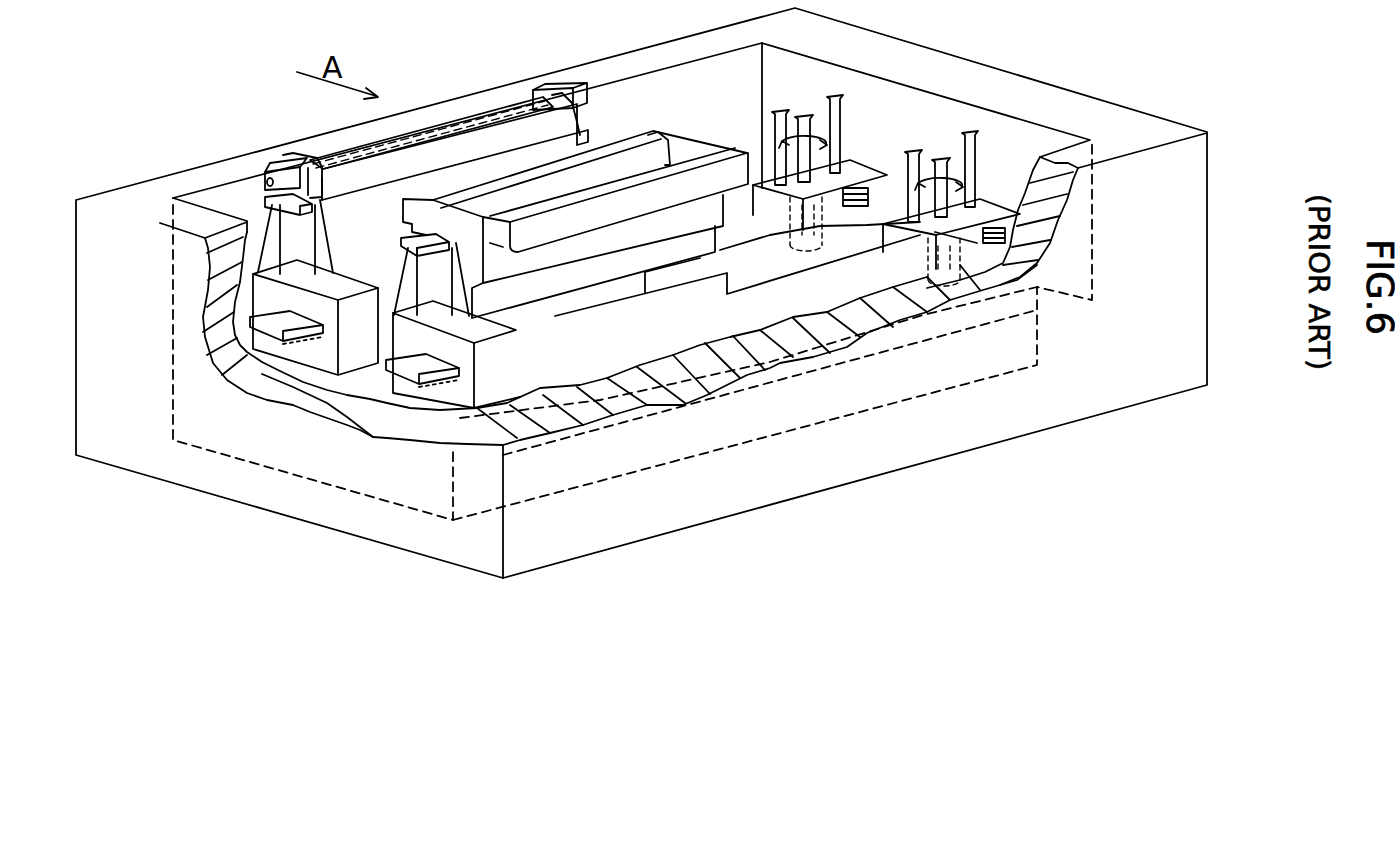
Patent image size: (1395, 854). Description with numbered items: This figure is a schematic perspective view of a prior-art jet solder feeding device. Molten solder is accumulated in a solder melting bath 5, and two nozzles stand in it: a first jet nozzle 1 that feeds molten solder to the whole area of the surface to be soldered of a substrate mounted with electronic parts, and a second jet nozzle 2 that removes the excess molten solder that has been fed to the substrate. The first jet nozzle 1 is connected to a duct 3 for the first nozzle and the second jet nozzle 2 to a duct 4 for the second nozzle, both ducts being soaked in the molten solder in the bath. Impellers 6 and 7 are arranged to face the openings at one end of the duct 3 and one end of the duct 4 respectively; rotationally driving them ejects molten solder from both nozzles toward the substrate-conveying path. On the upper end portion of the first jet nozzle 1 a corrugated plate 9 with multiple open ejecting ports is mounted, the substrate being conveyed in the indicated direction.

The first jet nozzle 1 is at (472, 84).
The second jet nozzle 2 is at (702, 130).
The duct for the first nozzle 3 is at (355, 353).
The duct for the second nozzle 4 is at (673, 328).
The solder melting bath 5 is at (1070, 408).
The impeller 6 is at (790, 202).
The impeller 7 is at (925, 257).
The corrugated plate 9 is at (433, 127).